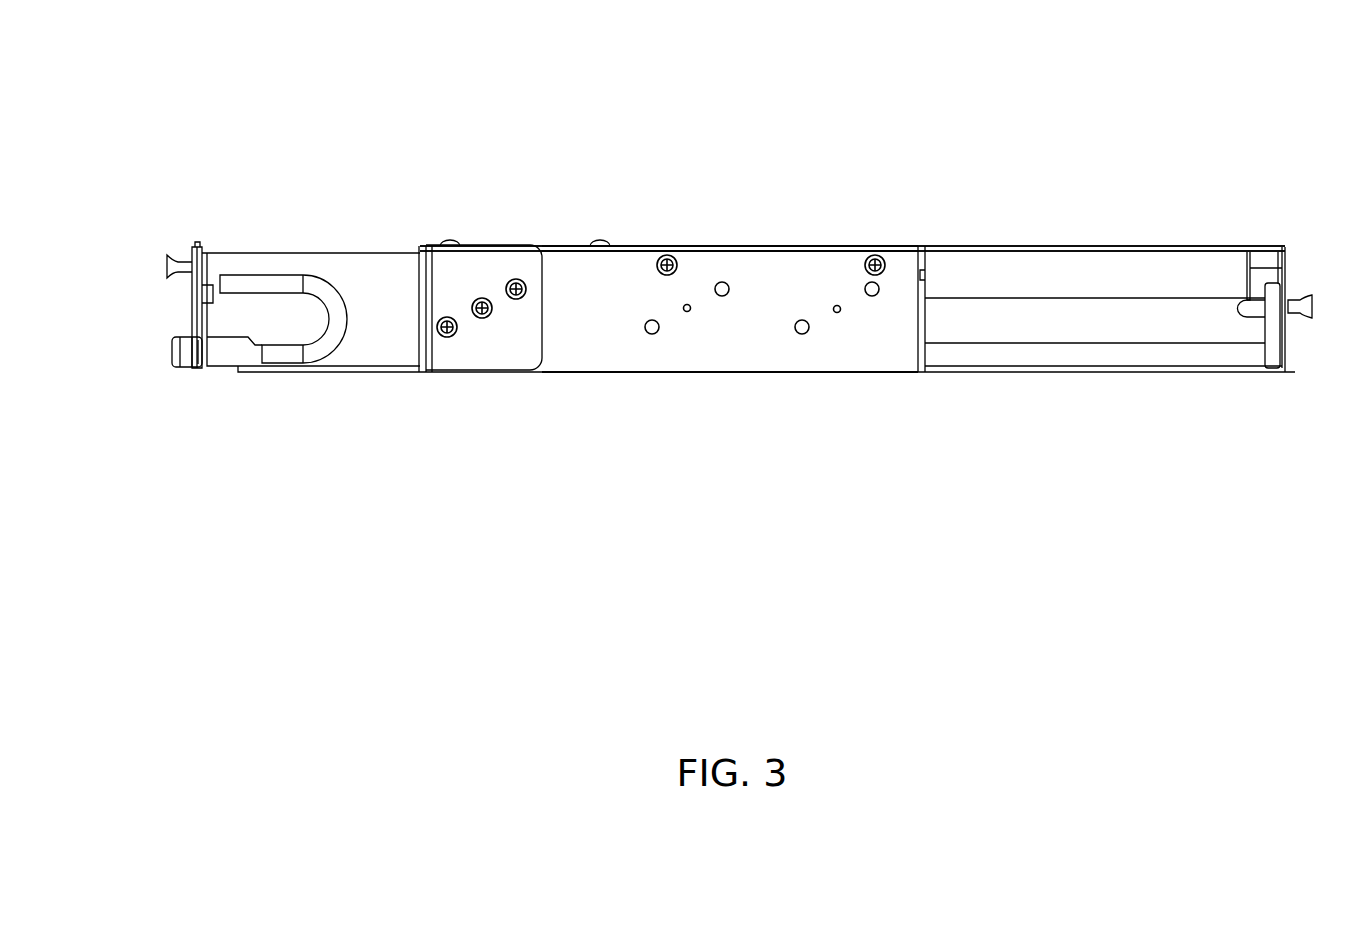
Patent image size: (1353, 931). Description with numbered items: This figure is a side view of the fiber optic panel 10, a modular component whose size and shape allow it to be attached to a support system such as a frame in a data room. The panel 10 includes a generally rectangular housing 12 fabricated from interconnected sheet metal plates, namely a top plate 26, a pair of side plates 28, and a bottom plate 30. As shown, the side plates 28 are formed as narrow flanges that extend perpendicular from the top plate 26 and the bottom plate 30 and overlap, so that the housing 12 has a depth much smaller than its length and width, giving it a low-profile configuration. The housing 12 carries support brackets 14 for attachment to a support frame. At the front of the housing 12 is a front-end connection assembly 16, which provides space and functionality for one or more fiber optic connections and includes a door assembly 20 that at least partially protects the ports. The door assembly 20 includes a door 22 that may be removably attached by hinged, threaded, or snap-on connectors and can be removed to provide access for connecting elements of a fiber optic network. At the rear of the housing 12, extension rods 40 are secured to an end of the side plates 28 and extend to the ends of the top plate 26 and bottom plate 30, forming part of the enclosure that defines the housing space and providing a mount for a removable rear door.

The fiber optic panel 10 is at (412, 102).
The housing 12 is at (715, 248).
The support bracket 14 is at (422, 352).
The front-end connection assembly 16 is at (297, 228).
The door assembly 20 is at (178, 385).
The door 22 is at (198, 245).
The top plate 26 is at (840, 247).
The side plate 28 is at (733, 350).
The bottom plate 30 is at (858, 365).
The extension rod 40 is at (1125, 327).